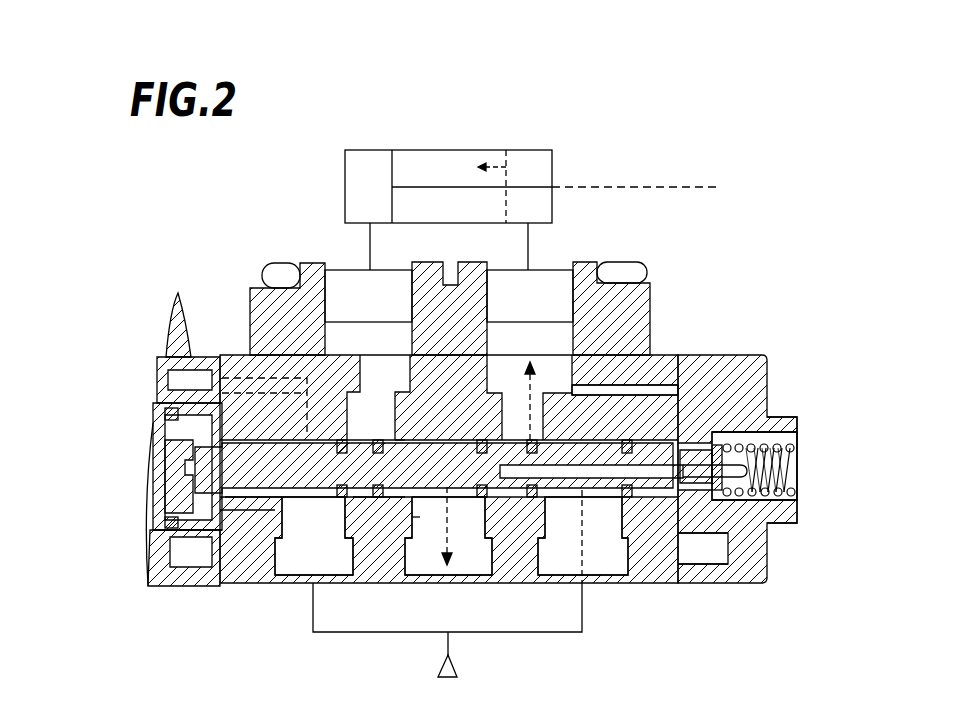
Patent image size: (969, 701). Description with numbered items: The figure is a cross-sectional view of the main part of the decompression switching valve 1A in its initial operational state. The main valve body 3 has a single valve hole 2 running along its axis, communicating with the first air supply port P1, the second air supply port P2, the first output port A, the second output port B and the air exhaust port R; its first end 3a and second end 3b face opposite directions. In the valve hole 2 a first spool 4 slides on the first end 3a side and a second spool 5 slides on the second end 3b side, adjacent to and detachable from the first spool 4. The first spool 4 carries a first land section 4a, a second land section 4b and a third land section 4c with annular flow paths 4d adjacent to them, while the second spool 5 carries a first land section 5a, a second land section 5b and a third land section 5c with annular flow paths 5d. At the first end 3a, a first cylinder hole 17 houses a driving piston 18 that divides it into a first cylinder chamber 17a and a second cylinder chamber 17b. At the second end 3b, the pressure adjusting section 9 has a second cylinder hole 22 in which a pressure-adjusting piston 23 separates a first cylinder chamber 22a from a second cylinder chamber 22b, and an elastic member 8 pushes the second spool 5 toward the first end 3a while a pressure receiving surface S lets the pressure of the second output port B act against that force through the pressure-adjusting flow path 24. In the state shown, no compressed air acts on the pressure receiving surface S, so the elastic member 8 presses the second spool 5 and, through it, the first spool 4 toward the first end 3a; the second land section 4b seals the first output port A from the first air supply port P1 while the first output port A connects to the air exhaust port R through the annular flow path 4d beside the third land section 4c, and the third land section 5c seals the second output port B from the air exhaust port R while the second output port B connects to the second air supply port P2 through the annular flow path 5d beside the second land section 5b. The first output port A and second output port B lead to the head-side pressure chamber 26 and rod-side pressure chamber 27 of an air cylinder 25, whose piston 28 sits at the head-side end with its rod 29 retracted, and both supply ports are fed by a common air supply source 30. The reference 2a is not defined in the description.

The decompression switching valve 1A is at (800, 618).
The valve hole 2 is at (247, 440).
The body land 2a is at (400, 487).
The main valve body 3 is at (663, 352).
The first end 3a is at (178, 570).
The second end 3b is at (698, 545).
The first spool 4 is at (278, 500).
The first land section 4a is at (220, 512).
The second land section 4b is at (375, 497).
The third land section 4c is at (425, 530).
The annular flow paths 4d is at (365, 380).
The second spool 5 is at (605, 440).
The first land section 5a is at (600, 497).
The second land section 5b is at (560, 500).
The third land section 5c is at (503, 497).
The annular flow paths 5d is at (505, 440).
The elastic member 8 is at (795, 412).
The pressure adjusting section 9 is at (770, 352).
The first cylinder hole 17 is at (153, 420).
The first cylinder chamber 17a is at (165, 520).
The second cylinder chamber 17b is at (160, 507).
The driving piston 18 is at (150, 450).
The second cylinder hole 22 is at (725, 500).
The first cylinder chamber 22a is at (717, 432).
The second cylinder chamber 22b is at (775, 432).
The pressure-adjusting piston 23 is at (715, 445).
The pressure-adjusting flow path 24 is at (690, 443).
The air cylinder 25 is at (518, 135).
The head-side pressure chamber 26 is at (370, 157).
The rod-side pressure chamber 27 is at (545, 162).
The piston 28 is at (392, 163).
The rod 29 is at (585, 187).
The air supply source 30 is at (440, 670).
The first output port A is at (387, 375).
The second output port B is at (541, 401).
The first air supply port P1 is at (303, 565).
The second air supply port P2 is at (600, 560).
The air exhaust port R is at (467, 560).
The pressure receiving surface S is at (660, 505).